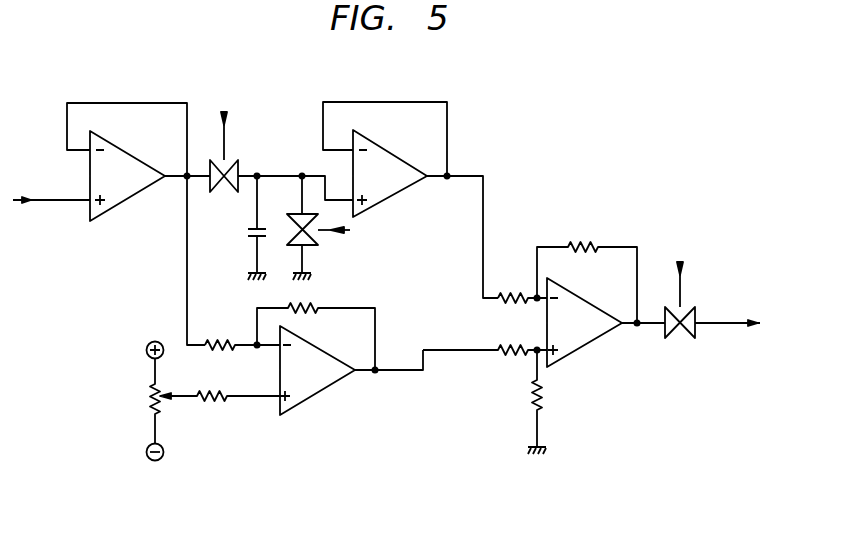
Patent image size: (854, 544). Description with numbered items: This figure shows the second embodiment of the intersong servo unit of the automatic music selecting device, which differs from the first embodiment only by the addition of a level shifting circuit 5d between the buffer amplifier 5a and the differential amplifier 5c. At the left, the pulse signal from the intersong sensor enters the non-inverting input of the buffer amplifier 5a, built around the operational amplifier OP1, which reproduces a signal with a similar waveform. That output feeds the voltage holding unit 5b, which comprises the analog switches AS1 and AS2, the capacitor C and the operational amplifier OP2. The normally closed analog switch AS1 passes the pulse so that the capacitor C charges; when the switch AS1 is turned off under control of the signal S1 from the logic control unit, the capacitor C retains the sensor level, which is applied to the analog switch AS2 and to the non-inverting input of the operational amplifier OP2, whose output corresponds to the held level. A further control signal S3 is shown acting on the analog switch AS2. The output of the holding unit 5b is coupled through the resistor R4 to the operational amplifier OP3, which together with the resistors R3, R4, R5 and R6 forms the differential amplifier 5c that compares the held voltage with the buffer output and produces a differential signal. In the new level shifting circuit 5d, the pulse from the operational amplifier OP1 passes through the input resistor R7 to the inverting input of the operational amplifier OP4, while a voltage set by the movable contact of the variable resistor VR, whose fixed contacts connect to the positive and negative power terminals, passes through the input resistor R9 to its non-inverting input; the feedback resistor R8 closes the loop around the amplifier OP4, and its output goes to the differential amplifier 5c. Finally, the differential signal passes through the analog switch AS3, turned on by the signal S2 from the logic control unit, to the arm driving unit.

The buffer amplifier 5a is at (127, 143).
The voltage holding unit 5b is at (385, 140).
The differential amplifier 5c is at (587, 285).
The level shifting circuit 5d is at (316, 379).
The operational amplifier OP1 is at (127, 176).
The operational amplifier OP2 is at (390, 173).
The operational amplifier OP3 is at (584, 322).
The operational amplifier OP4 is at (317, 370).
The analog switch AS1 is at (228, 193).
The analog switch AS2 is at (314, 228).
The analog switch AS3 is at (680, 338).
The signal S1 is at (225, 122).
The signal S2 is at (677, 272).
The switch control signal S3 is at (346, 237).
The capacitor C is at (261, 228).
The resistor R3 is at (587, 282).
The resistor R4 is at (522, 313).
The resistor R5 is at (485, 365).
The resistor R6 is at (545, 402).
The input resistor R7 is at (242, 360).
The feedback resistor R8 is at (316, 336).
The input resistor R9 is at (222, 411).
The variable resistor VR is at (144, 401).